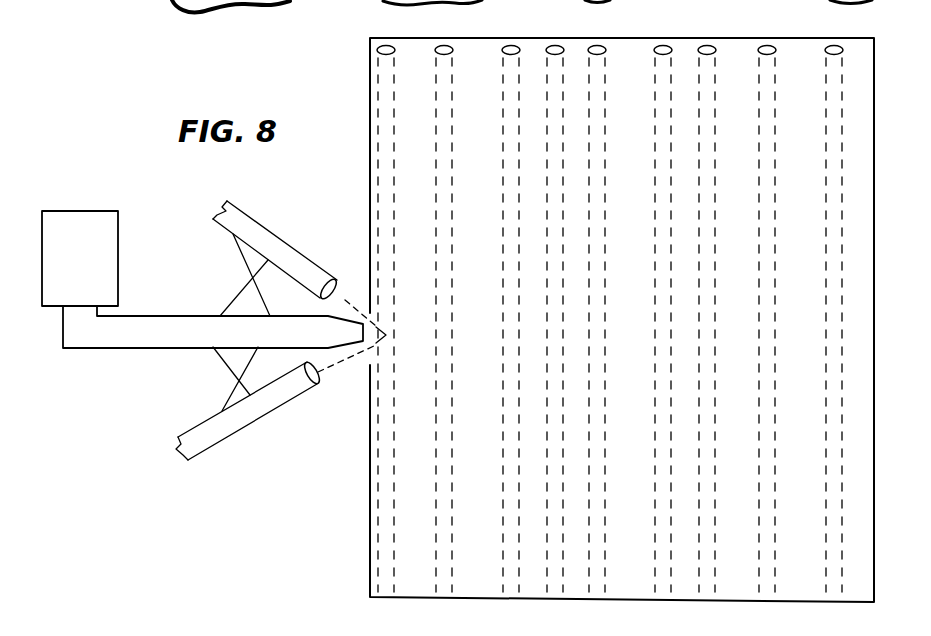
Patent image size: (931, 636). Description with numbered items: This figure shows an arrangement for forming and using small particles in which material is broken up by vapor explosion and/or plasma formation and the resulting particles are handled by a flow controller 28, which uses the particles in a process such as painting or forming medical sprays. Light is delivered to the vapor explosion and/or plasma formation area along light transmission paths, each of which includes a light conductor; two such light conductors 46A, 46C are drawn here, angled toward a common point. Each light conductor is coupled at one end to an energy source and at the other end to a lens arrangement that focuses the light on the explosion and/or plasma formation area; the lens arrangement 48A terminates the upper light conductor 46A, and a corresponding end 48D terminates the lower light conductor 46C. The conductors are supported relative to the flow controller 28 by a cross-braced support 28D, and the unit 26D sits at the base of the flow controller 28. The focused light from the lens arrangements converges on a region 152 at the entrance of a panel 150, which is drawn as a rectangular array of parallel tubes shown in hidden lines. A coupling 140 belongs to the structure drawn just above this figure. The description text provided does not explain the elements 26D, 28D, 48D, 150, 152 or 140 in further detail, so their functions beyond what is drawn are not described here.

The drive unit 26D is at (92, 224).
The flow controller 28 is at (182, 325).
The cross brace support 28D is at (219, 382).
The light conductor 46A is at (252, 214).
The light conductor 46C is at (247, 408).
The lens arrangement 48A is at (342, 292).
The lower tube outlet end 48D is at (313, 374).
The tube array panel 150 is at (580, 34).
The entry aperture 152 is at (362, 306).
The coupling 140 is at (290, 5).